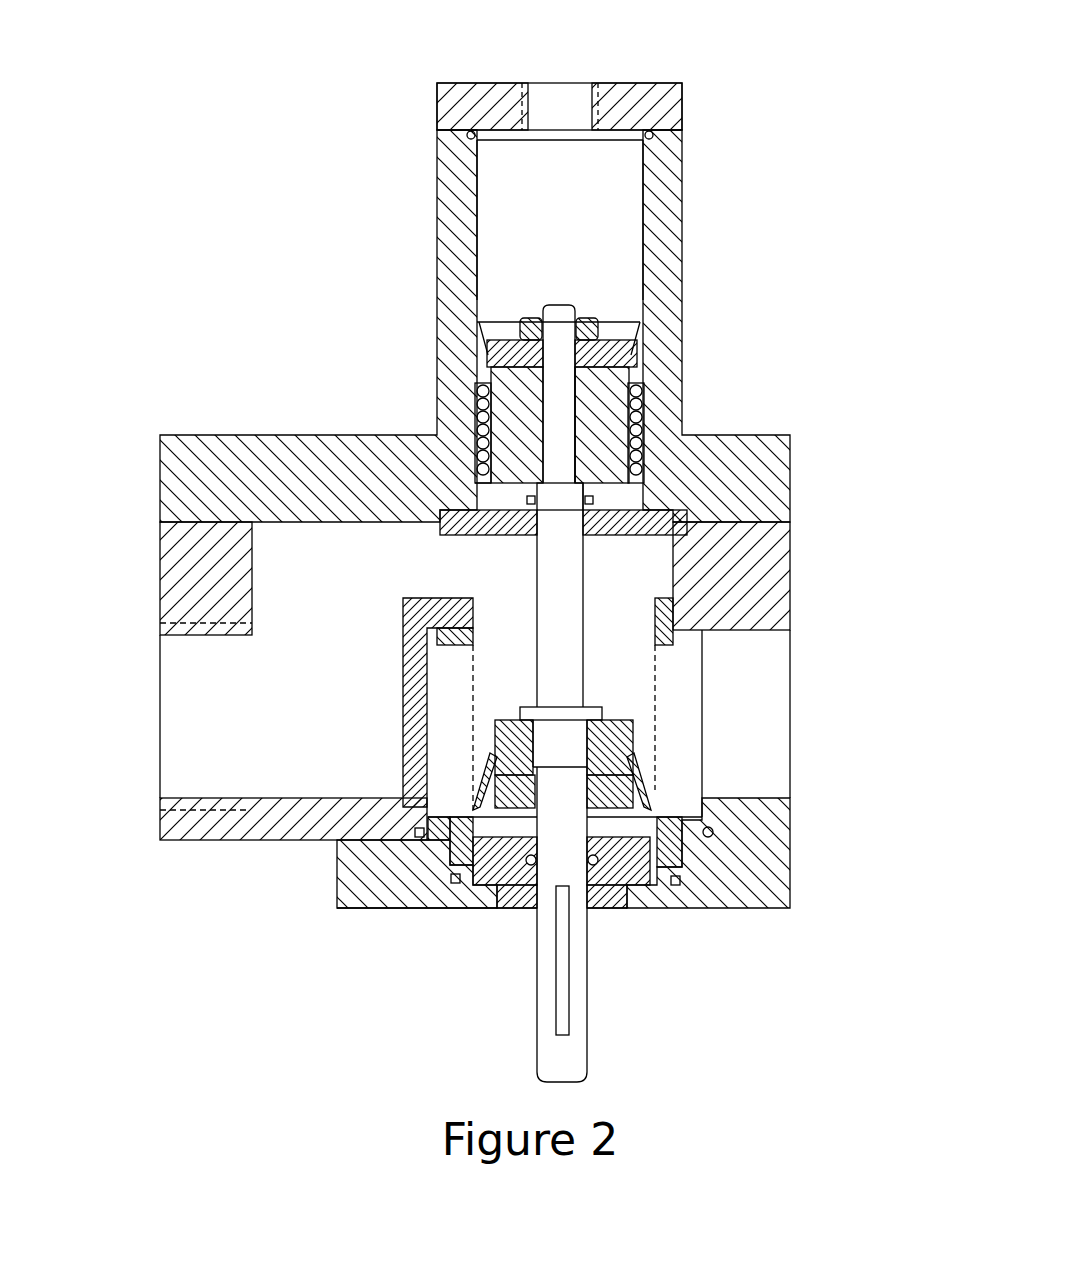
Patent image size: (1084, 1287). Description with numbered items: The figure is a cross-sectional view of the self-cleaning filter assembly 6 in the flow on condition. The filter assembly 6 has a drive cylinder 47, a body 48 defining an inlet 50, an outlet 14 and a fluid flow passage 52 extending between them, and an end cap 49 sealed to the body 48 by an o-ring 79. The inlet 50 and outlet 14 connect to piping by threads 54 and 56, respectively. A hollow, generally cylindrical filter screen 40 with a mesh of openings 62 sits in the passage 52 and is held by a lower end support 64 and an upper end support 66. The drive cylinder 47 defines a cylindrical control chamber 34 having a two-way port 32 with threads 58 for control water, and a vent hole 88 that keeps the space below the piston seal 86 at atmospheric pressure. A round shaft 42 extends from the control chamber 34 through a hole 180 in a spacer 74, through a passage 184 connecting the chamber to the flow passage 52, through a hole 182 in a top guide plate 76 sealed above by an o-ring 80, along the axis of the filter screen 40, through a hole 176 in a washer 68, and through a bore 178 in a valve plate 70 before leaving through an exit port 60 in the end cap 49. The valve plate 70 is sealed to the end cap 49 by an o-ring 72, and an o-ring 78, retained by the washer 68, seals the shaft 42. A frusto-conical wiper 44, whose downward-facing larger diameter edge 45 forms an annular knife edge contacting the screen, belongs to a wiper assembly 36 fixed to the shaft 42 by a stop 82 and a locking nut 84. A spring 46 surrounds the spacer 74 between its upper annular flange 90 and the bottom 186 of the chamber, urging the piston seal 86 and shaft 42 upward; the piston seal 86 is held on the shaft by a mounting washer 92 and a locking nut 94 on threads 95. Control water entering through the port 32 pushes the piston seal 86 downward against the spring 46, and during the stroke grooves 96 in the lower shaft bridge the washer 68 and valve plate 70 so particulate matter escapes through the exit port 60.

The filter assembly 6 is at (405, 180).
The outlet 14 is at (770, 730).
The two-way port 32 is at (572, 103).
The control chamber 34 is at (605, 230).
The wiper assembly 36 is at (615, 722).
The filter screen 40 is at (473, 738).
The shaft 42 is at (570, 1060).
The wiper 44 is at (495, 795).
The larger diameter edge 45 is at (470, 810).
The spring 46 is at (640, 432).
The drive cylinder 47 is at (670, 187).
The body 48 is at (205, 558).
The end cap 49 is at (363, 887).
The inlet 50 is at (215, 715).
The fluid flow passage 52 is at (492, 621).
The threads 54 is at (205, 630).
The threads 56 is at (702, 633).
The threads 58 is at (527, 105).
The exit port 60 is at (522, 903).
The mesh of openings 62 is at (468, 690).
The lower end support 64 is at (760, 808).
The upper end support 66 is at (672, 603).
The washer 68 is at (492, 845).
The valve plate 70 is at (520, 852).
The o-ring 72 is at (490, 868).
The spacer 74 is at (525, 400).
The top guide plate 76 is at (590, 525).
The o-ring 78 is at (488, 880).
The o-ring 79 is at (418, 833).
The o-ring 80 is at (600, 498).
The stop 82 is at (600, 713).
The locking nut 84 is at (640, 788).
The piston seal 86 is at (577, 323).
The vent hole 88 is at (580, 442).
The upper annular flange 90 is at (623, 350).
The mounting washer 92 is at (490, 338).
The locking nut 94 is at (518, 317).
The threads 95 is at (528, 300).
The grooves 96 is at (565, 935).
The hole 176 is at (690, 835).
The bore 178 is at (680, 878).
The hole 180 is at (578, 448).
The hole 182 is at (485, 528).
The passage 184 is at (485, 478).
The bottom 186 is at (482, 440).